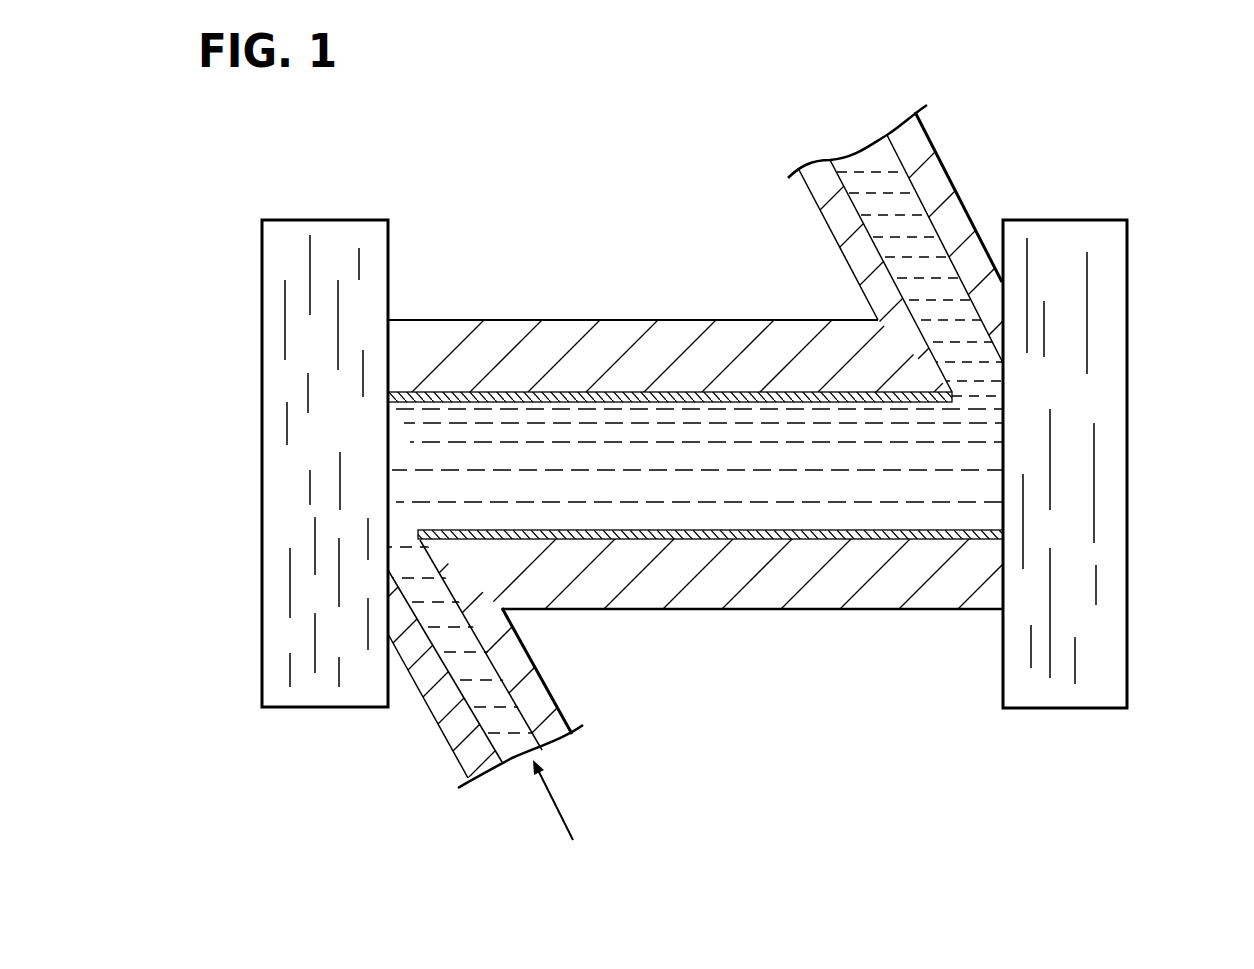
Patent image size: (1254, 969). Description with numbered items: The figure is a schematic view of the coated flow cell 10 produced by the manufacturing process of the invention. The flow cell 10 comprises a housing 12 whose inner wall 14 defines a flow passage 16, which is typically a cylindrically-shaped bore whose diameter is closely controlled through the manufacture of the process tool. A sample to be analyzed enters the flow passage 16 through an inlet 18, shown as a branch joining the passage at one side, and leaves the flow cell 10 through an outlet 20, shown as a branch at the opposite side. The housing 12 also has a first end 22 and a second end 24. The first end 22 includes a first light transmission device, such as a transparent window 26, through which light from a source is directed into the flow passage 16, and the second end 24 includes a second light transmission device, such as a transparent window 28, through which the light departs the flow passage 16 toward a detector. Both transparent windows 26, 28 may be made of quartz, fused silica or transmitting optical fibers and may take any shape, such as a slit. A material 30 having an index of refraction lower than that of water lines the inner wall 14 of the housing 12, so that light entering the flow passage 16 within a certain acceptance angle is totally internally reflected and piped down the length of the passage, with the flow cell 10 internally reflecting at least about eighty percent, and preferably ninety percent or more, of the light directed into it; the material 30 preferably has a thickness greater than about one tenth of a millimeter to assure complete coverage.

The flow cell 10 is at (491, 234).
The housing 12 is at (825, 588).
The inner wall 14 is at (570, 392).
The flow passage 16 is at (712, 470).
The inlet 18 is at (432, 707).
The outlet 20 is at (946, 168).
The first end 22 is at (262, 353).
The second end 24 is at (1129, 317).
The transparent window 26 is at (308, 467).
The transparent window 28 is at (1071, 466).
The material 30 is at (895, 402).